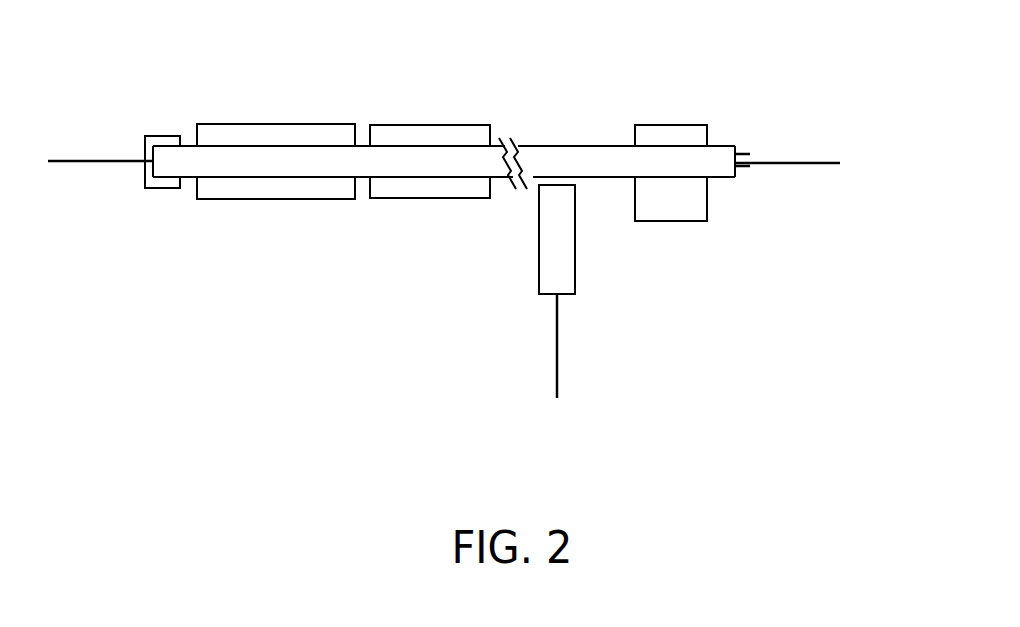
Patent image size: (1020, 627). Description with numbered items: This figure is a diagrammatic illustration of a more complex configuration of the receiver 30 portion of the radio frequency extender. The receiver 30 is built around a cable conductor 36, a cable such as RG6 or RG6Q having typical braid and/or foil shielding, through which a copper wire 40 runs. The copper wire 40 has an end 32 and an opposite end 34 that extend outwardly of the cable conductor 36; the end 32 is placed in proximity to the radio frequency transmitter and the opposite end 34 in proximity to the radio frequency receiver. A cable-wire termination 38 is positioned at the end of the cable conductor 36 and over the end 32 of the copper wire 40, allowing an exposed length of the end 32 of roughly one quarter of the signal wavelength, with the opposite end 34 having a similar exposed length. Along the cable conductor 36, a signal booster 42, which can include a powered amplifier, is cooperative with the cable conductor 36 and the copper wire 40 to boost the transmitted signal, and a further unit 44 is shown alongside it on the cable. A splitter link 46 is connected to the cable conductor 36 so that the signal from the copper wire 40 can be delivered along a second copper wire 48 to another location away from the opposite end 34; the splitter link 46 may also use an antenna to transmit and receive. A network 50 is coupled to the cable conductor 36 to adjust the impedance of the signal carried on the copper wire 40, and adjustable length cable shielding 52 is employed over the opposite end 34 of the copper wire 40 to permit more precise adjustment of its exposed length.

The receiver 30 is at (449, 225).
The end 32 is at (87, 158).
The opposite end 34 is at (828, 167).
The cable conductor 36 is at (592, 147).
The cable-wire termination 38 is at (159, 136).
The copper wire 40 is at (790, 158).
The signal booster 42 is at (290, 123).
The second optical component 44 is at (432, 125).
The splitter link 46 is at (575, 276).
The copper wire 48 is at (558, 343).
The network 50 is at (670, 221).
The adjustable length cable shielding 52 is at (743, 172).